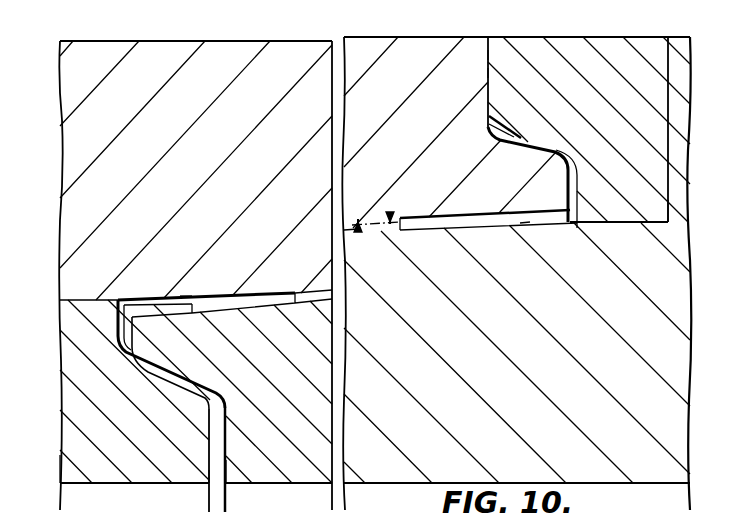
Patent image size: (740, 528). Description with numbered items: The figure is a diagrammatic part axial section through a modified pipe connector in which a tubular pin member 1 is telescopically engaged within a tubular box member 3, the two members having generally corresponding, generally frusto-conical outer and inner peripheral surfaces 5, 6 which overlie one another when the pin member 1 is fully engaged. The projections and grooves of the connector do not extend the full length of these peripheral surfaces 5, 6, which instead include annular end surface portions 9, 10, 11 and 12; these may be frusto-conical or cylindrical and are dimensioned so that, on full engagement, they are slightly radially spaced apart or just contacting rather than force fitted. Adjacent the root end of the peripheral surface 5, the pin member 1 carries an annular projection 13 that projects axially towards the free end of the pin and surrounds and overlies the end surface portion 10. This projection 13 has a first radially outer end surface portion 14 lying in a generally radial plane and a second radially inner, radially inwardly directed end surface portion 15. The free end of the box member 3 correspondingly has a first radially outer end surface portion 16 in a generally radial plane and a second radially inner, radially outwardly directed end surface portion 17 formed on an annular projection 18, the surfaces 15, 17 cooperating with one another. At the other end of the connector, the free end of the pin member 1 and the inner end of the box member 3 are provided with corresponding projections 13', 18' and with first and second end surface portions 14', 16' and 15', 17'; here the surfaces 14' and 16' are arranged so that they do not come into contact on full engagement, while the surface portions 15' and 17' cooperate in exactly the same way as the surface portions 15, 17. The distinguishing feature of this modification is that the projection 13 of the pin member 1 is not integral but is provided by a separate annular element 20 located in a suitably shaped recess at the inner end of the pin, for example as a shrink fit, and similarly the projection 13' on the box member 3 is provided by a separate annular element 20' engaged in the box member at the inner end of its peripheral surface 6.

The tubular pin member 1 is at (290, 362).
The tubular box member 3 is at (196, 183).
The outer peripheral surface 5 is at (389, 215).
The inner peripheral surface 6 is at (359, 234).
The annular end surface portion 9 is at (245, 312).
The annular end surface portion 10 is at (525, 228).
The annular end surface portion 11 is at (177, 297).
The annular end surface portion 12 is at (488, 210).
The annular projection 13 is at (589, 129).
The first radially outer end surface portion 14 is at (524, 55).
The second radially inner end surface portion 15 is at (547, 169).
The first radially outer end surface portion 16 is at (453, 61).
The second radially inner end surface portion 17 is at (516, 143).
The annular projection 18 is at (552, 223).
The separate annular element 20 is at (646, 224).
The projection 13' is at (185, 494).
The first end surface portion 14' is at (186, 460).
The second end surface portion 15' is at (171, 359).
The first end surface portion 16' is at (259, 455).
The second end surface portion 17' is at (179, 363).
The projection 18' is at (164, 335).
The separate annular element 20' is at (89, 487).